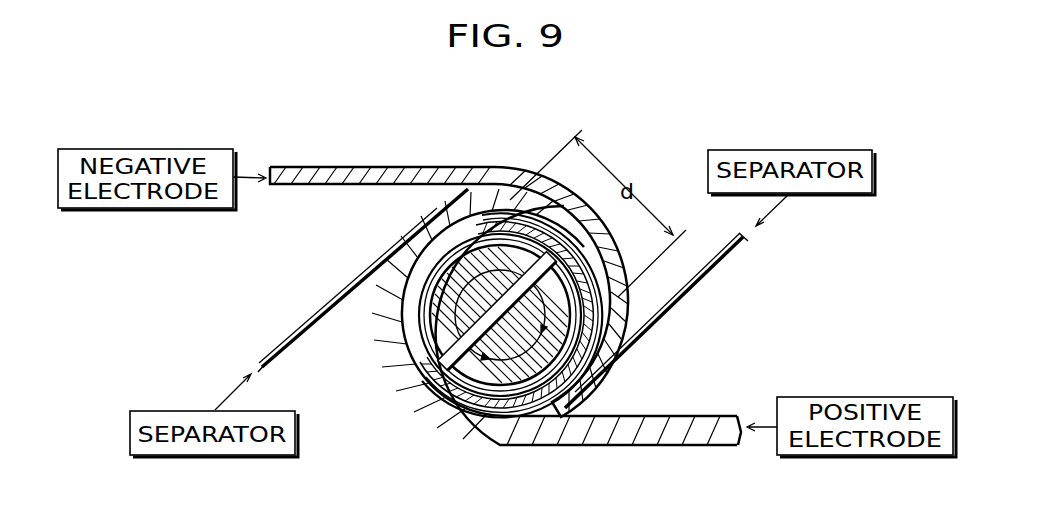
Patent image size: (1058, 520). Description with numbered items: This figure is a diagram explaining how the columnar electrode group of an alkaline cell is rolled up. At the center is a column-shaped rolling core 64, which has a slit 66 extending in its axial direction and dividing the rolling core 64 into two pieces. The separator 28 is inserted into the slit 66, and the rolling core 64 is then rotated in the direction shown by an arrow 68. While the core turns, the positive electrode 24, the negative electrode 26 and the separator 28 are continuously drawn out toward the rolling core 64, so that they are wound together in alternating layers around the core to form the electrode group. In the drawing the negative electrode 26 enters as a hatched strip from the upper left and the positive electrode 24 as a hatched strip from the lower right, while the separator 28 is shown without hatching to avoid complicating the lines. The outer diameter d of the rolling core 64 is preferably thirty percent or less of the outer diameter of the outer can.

The positive electrode 24 is at (626, 438).
The negative electrode 26 is at (380, 167).
The separator 28 is at (312, 310).
The rolling core 64 is at (507, 372).
The slit 66 is at (420, 388).
The arrow 68 is at (445, 354).